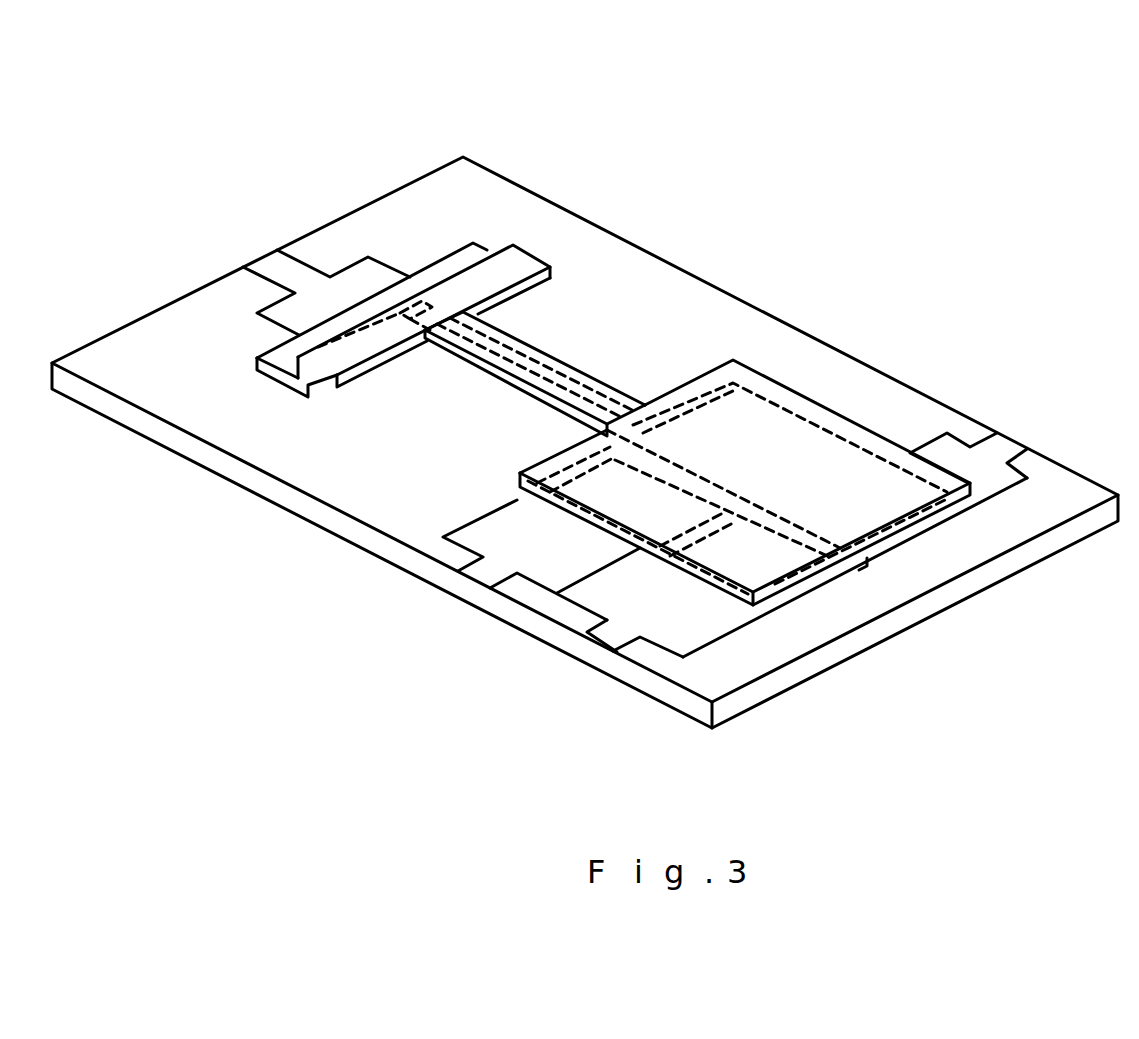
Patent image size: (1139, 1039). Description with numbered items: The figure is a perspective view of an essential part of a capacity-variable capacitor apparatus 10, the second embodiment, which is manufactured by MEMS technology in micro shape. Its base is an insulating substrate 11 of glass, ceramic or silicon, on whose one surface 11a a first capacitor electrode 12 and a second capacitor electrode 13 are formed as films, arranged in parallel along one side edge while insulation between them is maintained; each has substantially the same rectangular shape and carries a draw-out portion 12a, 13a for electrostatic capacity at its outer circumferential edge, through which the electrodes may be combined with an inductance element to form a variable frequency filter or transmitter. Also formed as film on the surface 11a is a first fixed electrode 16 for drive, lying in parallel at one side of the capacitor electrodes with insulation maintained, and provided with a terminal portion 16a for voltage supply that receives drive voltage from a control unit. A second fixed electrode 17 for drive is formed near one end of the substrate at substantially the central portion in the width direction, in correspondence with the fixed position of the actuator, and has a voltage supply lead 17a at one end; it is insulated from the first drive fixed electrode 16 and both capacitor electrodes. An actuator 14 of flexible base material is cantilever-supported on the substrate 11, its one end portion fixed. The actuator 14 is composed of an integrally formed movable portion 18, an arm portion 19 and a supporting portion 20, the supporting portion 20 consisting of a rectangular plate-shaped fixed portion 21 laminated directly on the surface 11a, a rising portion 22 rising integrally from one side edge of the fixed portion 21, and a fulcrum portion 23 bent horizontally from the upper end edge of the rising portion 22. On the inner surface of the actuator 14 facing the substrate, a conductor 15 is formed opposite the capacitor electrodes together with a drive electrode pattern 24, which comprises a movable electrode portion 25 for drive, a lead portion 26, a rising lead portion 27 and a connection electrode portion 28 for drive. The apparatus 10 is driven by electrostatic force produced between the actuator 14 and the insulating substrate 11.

The capacitor apparatus 10 is at (507, 126).
The insulating substrate 11 is at (104, 340).
The one surface 11a is at (203, 322).
The first capacitor electrode 12 is at (668, 624).
The draw-out portion 12a is at (608, 633).
The second capacitor electrode 13 is at (533, 558).
The draw-out portion 13a is at (484, 568).
The actuator 14 is at (773, 474).
The conductor 15 is at (805, 575).
The first fixed electrode for drive 16 is at (993, 485).
The terminal portion for voltage supply 16a is at (1007, 445).
The second fixed electrode for drive 17 is at (350, 293).
The voltage supply lead 17a is at (272, 265).
The movable portion 18 is at (862, 428).
The arm portion 19 is at (580, 372).
The supporting portion 20 is at (349, 443).
The fixed portion 21 is at (265, 372).
The rising portion 22 is at (292, 388).
The fulcrum portion 23 is at (320, 395).
The drive electrode pattern 24 is at (708, 382).
The movable electrode portion for drive 25 is at (920, 532).
The lead portion 26 is at (527, 365).
The rising lead portion 27 is at (398, 330).
The connection electrode portion for drive 28 is at (432, 312).